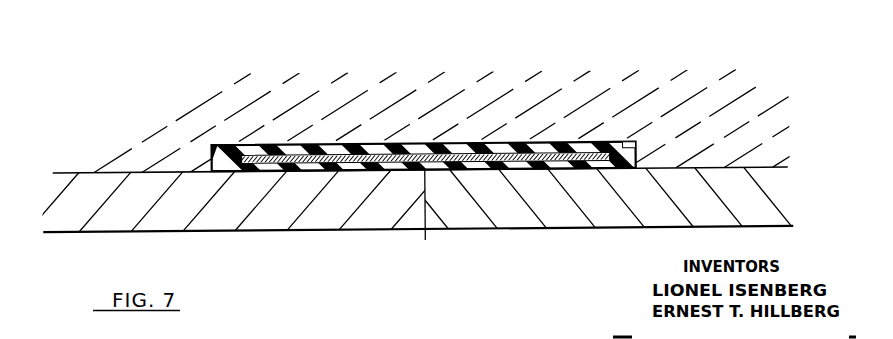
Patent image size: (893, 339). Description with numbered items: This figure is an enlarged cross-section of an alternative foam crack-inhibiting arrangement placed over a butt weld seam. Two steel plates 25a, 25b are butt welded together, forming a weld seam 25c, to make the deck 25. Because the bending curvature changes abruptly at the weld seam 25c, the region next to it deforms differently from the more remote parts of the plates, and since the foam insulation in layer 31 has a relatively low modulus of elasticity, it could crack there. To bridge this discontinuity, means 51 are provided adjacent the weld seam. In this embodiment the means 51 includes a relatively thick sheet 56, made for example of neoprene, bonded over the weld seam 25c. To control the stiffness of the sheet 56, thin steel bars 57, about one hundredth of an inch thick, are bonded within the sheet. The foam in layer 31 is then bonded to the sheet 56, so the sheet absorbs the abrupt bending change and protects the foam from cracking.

The deck 25 is at (791, 175).
The steel plate 25a is at (225, 216).
The steel plate 25b is at (600, 216).
The weld seam 25c is at (425, 240).
The foam insulation layer 31 is at (144, 126).
The crack-inhibiting means 51 is at (619, 124).
The sheet 56 is at (480, 148).
The steel bars 57 is at (287, 159).